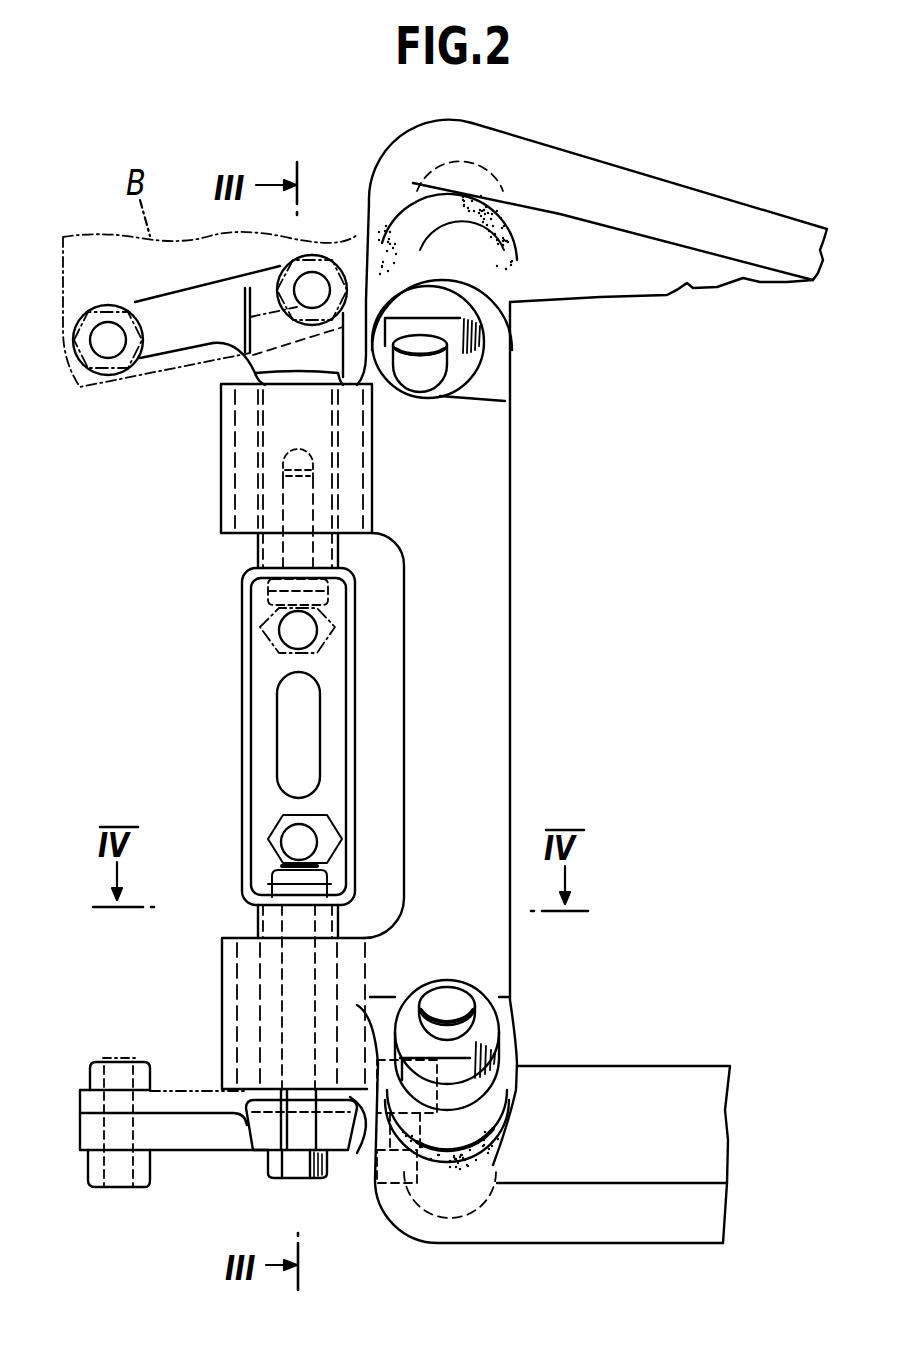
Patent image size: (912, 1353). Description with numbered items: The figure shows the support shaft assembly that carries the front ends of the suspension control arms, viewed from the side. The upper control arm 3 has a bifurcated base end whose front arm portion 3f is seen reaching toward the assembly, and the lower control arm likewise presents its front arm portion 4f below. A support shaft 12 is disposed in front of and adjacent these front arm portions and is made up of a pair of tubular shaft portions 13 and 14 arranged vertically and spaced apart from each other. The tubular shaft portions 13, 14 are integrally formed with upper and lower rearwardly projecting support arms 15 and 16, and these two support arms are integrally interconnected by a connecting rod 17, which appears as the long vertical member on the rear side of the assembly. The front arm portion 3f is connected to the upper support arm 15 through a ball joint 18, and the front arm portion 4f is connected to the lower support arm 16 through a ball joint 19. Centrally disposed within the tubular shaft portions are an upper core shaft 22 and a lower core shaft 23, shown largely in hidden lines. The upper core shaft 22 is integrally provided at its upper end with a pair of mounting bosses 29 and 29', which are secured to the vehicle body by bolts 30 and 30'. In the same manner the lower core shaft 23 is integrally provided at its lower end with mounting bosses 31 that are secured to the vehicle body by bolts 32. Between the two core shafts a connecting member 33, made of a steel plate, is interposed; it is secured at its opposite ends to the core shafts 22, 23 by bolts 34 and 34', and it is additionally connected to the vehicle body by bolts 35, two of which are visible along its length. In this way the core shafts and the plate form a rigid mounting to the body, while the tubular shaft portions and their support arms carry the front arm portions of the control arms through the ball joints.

The upper control arm 3 is at (751, 216).
The front arm portion 3f is at (632, 186).
The front arm portion 4f is at (607, 1083).
The support shaft 12 is at (212, 448).
The tubular shaft portion 13 is at (230, 502).
The tubular shaft portion 14 is at (224, 1000).
The support arm 15 is at (478, 283).
The support arm 16 is at (490, 1103).
The connecting rod 17 is at (505, 678).
The ball joint 18 is at (505, 183).
The ball joint 19 is at (477, 1205).
The upper core shaft 22 is at (334, 442).
The lower core shaft 23 is at (340, 967).
The mounting boss 29 is at (176, 310).
The mounting boss 29' is at (273, 281).
The bolt 30 is at (214, 372).
The bolt 30' is at (248, 320).
The mounting boss 31 is at (93, 1130).
The bolt 32 is at (118, 1188).
The connecting member 33 is at (243, 718).
The bolt 34 is at (262, 596).
The bolt 34' is at (263, 860).
The bolt 35 is at (322, 646).